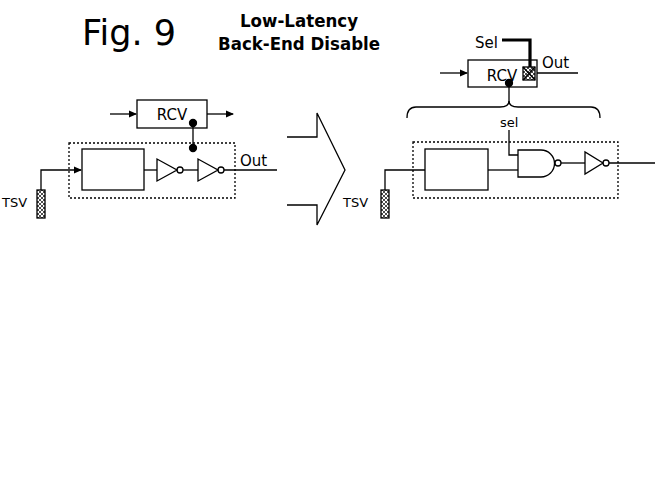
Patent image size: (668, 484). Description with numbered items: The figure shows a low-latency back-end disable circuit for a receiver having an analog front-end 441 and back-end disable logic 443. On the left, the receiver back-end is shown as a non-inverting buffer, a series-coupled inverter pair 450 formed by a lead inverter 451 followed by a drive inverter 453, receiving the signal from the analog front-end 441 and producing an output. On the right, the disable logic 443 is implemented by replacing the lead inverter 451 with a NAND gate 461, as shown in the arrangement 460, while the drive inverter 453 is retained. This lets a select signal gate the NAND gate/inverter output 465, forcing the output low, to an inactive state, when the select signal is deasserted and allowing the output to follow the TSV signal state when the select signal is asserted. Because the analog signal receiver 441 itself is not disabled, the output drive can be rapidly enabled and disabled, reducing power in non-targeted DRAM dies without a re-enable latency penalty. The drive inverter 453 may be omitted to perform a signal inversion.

The analog front-end 441 is at (285, 169).
The back-end disable logic 443 is at (538, 87).
The series-coupled inverter pair 450 is at (362, 188).
The lead inverter 451 is at (171, 167).
The drive inverter 453 is at (426, 172).
The NAND gate arrangement 460 is at (517, 181).
The NAND gate 461 is at (536, 153).
The NAND gate/inverter output 465 is at (632, 167).